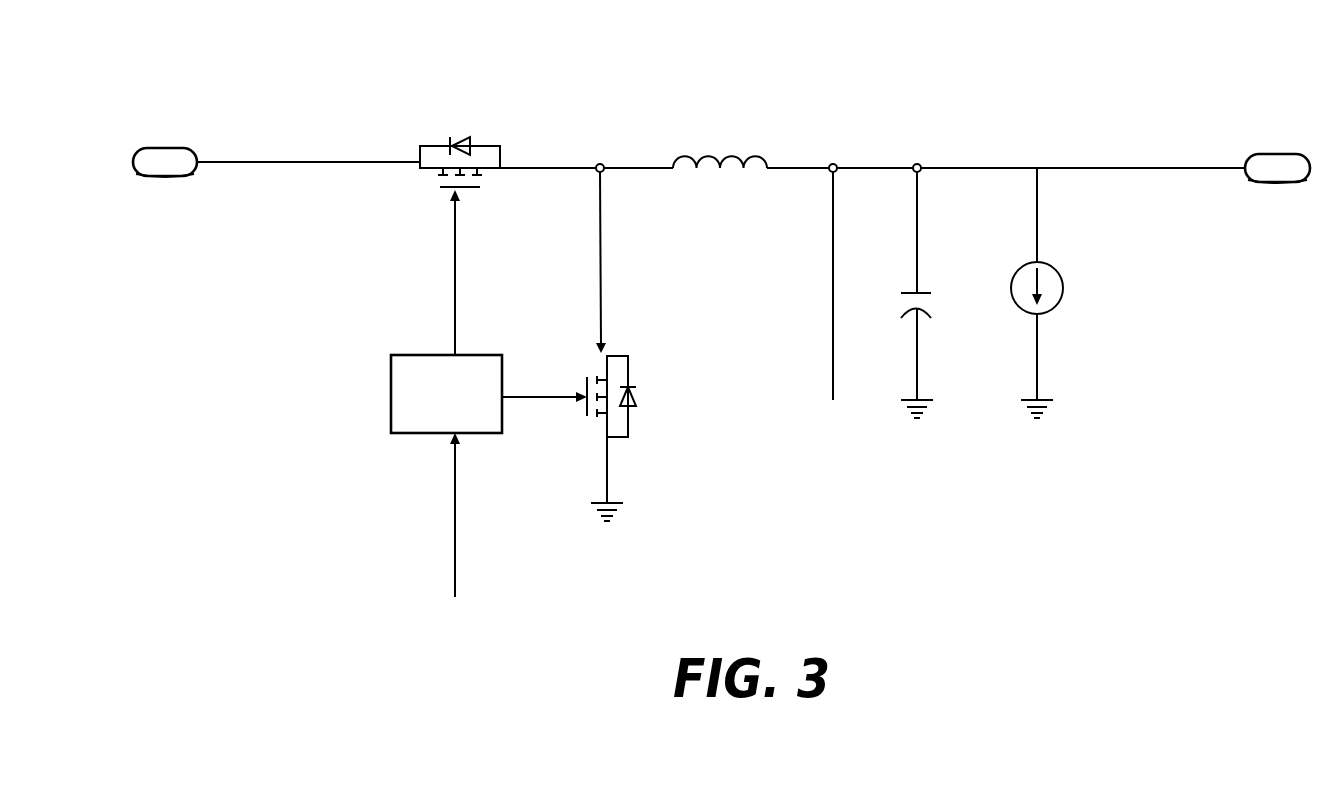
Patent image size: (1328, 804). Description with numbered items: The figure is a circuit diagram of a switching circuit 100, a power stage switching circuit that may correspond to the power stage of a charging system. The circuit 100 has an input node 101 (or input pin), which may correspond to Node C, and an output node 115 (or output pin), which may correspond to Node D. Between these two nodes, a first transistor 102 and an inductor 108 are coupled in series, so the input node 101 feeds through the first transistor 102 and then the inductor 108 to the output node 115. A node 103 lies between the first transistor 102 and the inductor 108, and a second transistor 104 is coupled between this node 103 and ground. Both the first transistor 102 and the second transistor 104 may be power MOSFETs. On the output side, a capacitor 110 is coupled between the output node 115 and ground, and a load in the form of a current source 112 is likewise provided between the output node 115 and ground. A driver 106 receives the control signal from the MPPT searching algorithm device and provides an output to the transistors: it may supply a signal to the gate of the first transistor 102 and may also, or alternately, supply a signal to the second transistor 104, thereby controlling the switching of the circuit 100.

The switching circuit 100 is at (721, 342).
The input node 101 is at (153, 179).
The first transistor 102 is at (451, 116).
The node 103 is at (600, 163).
The second transistor 104 is at (653, 376).
The driver 106 is at (391, 392).
The inductor 108 is at (728, 130).
The capacitor 110 is at (948, 335).
The current source 112 is at (1055, 268).
The output node 115 is at (1283, 155).